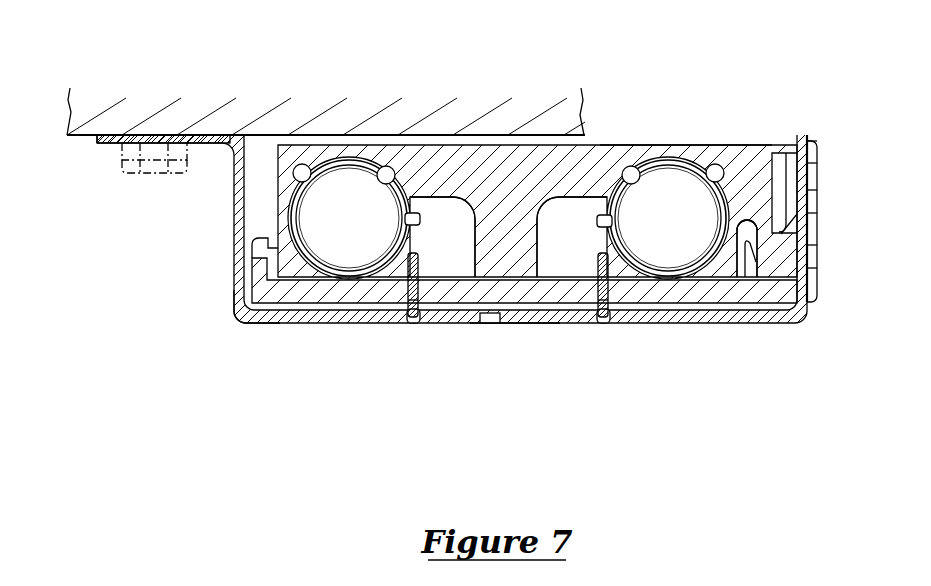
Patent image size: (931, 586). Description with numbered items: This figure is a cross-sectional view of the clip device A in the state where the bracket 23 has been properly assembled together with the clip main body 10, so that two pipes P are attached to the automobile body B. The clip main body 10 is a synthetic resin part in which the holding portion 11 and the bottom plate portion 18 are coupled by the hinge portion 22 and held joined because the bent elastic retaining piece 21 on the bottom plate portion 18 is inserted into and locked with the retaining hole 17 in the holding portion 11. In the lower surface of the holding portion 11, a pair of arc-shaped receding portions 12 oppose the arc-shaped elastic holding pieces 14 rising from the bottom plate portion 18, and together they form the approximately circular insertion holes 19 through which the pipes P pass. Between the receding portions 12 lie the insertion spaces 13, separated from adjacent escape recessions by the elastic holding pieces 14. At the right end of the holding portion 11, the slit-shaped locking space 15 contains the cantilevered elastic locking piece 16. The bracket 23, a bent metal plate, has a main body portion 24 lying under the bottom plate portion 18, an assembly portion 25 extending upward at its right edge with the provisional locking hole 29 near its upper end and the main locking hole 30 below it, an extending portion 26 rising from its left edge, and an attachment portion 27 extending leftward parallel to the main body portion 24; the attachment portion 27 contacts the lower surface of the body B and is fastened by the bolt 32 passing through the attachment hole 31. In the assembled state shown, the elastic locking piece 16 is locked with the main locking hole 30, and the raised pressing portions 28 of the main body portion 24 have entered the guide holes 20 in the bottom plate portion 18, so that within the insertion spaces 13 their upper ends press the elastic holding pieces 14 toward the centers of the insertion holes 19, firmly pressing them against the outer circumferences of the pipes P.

The clip main body 10 is at (725, 88).
The holding portion 11 is at (508, 172).
The arc-shaped receding portion 12 is at (295, 185).
The insertion space 13 is at (452, 197).
The elastic holding piece 14 is at (452, 290).
The locking space 15 is at (807, 265).
The elastic locking piece 16 is at (780, 232).
The retaining hole 17 is at (740, 222).
The bottom plate portion 18 is at (505, 325).
The insertion hole 19 is at (377, 185).
The guide hole 20 is at (413, 280).
The elastic retaining piece 21 is at (738, 253).
The hinge portion 22 is at (258, 240).
The bracket 23 is at (265, 342).
The main body portion 24 is at (493, 323).
The assembly portion 25 is at (807, 135).
The extending portion 26 is at (235, 205).
The attachment portion 27 is at (105, 141).
The pressing portion 28 is at (420, 300).
The provisional locking hole 29 is at (808, 163).
The main locking hole 30 is at (805, 215).
The attachment hole 31 is at (165, 134).
The bolt 32 is at (150, 170).
The clip device A is at (795, 80).
The body B is at (83, 118).
The pipe P is at (327, 165).